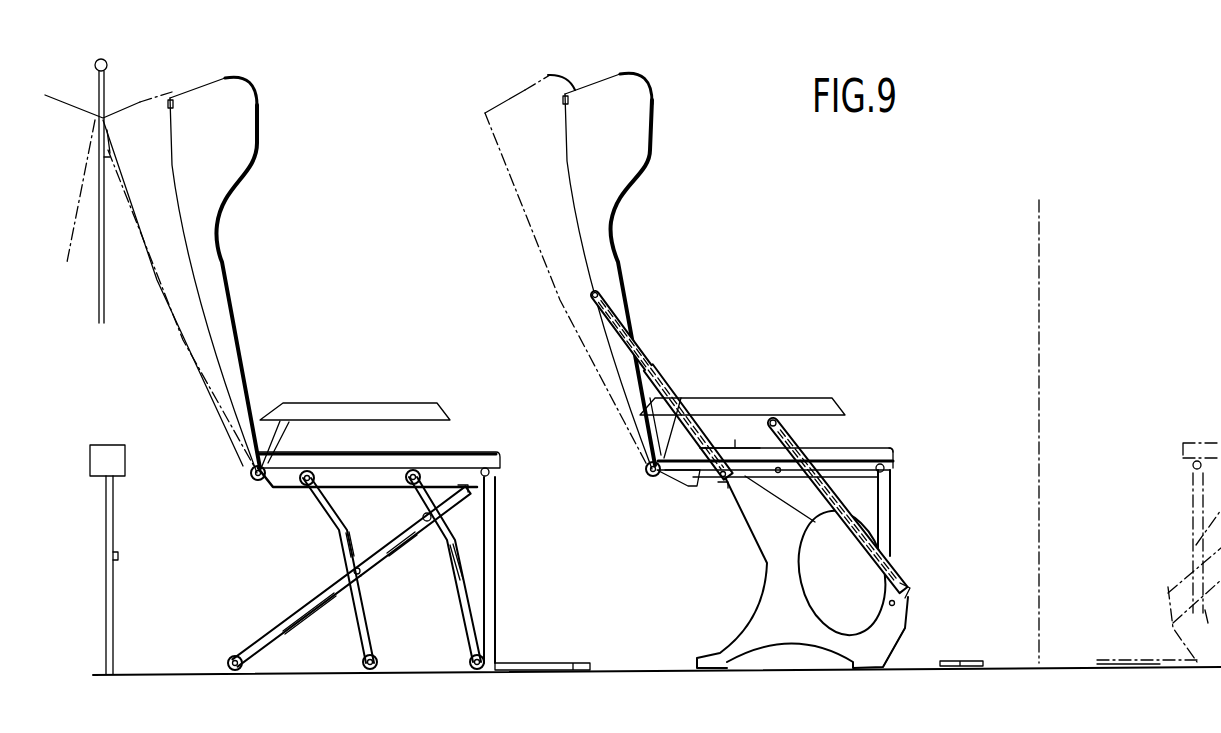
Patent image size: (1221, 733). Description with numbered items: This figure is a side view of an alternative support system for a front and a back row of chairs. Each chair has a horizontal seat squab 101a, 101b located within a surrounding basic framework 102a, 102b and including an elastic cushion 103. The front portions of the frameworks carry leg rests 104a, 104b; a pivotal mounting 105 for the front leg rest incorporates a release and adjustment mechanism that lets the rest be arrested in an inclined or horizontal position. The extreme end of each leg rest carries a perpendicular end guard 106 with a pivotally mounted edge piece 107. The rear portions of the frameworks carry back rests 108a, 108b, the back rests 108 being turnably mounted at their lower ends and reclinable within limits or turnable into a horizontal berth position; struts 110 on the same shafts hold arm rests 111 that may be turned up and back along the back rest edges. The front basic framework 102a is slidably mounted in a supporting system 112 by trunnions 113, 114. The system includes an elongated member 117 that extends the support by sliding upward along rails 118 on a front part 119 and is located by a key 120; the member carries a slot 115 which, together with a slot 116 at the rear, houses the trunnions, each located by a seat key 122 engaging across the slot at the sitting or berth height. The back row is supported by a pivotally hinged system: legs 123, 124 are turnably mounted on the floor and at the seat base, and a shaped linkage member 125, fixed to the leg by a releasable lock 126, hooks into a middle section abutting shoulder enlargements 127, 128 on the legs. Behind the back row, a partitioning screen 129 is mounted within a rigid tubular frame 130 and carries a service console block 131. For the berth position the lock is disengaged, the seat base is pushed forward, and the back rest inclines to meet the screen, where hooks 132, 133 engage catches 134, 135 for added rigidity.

The tubular frame 130 is at (108, 66).
The hook 133 is at (170, 103).
The catch 134 is at (110, 158).
The back rest 108b is at (222, 257).
The service console block 131 is at (122, 444).
The partitioning screen 129 is at (114, 575).
The catch 135 is at (118, 552).
The arm rest 111 is at (335, 410).
The strut 110 is at (288, 436).
The seat squab 101b is at (493, 450).
The leg rest 104b is at (492, 487).
The basic framework 102b is at (297, 492).
The shoulder enlargement 127 is at (410, 517).
The releasable lock 126 is at (447, 517).
The leg 123 is at (338, 543).
The leg 124 is at (460, 558).
The shoulder enlargement 128 is at (360, 572).
The linkage member 125 is at (307, 610).
The hook 132 is at (562, 100).
The back rest 108a is at (613, 242).
The slot 116 is at (642, 358).
The seat key 122 is at (735, 446).
The slot 115 is at (793, 440).
The trunnion 113 is at (866, 442).
The seat squab 101a is at (867, 435).
The elastic cushion 103 is at (893, 448).
The pivotal mounting 105 is at (890, 465).
The leg rest 104a is at (887, 503).
The back rest 108 is at (646, 470).
The basic framework 102a is at (700, 486).
The trunnion 114 is at (721, 490).
The supporting system 112 is at (783, 583).
The elongated member 117 is at (878, 562).
The rail 118 is at (902, 580).
The key 120 is at (890, 603).
The front part 119 is at (907, 628).
The end guard 106 is at (950, 658).
The edge piece 107 is at (985, 662).